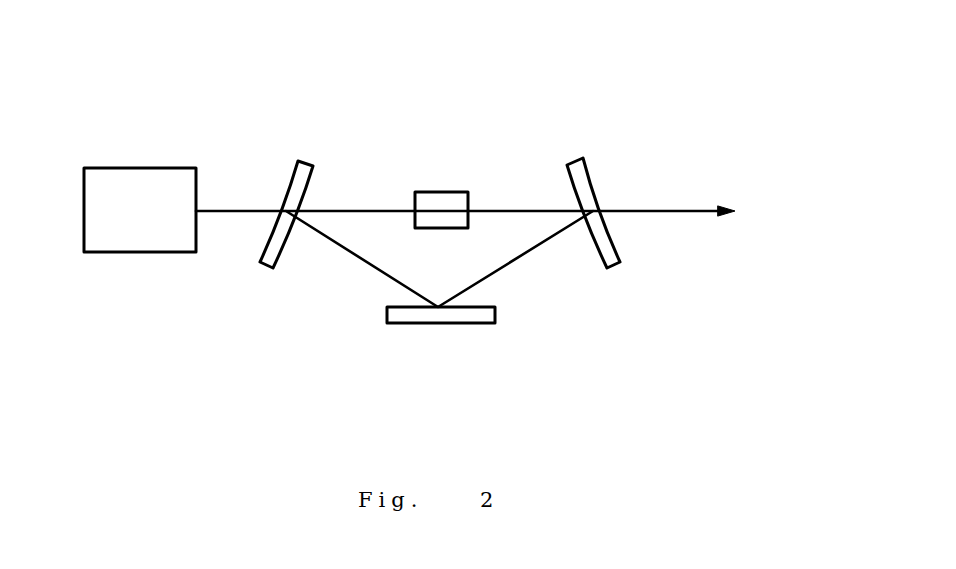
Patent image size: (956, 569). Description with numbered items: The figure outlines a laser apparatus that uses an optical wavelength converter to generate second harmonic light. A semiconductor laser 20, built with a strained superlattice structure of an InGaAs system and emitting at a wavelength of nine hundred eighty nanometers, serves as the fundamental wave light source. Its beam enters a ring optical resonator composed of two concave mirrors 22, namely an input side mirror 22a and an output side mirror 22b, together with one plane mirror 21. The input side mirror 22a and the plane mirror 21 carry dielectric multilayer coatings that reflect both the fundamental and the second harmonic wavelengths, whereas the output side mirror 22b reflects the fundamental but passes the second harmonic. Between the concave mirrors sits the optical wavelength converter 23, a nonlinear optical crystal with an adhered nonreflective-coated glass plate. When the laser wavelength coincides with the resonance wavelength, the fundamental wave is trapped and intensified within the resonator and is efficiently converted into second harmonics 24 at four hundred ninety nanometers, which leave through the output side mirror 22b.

The semiconductor laser 20 is at (148, 252).
The plane mirror 21 is at (457, 323).
The concave mirrors 22 is at (444, 148).
The input side mirror 22a is at (288, 183).
The output side mirror 22b is at (592, 172).
The optical wavelength converter 23 is at (440, 192).
The second harmonics 24 is at (685, 205).